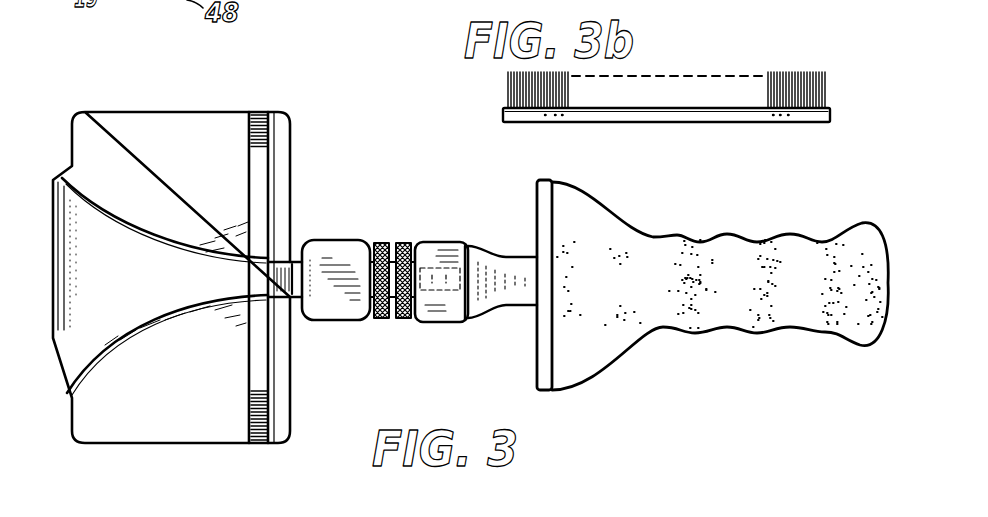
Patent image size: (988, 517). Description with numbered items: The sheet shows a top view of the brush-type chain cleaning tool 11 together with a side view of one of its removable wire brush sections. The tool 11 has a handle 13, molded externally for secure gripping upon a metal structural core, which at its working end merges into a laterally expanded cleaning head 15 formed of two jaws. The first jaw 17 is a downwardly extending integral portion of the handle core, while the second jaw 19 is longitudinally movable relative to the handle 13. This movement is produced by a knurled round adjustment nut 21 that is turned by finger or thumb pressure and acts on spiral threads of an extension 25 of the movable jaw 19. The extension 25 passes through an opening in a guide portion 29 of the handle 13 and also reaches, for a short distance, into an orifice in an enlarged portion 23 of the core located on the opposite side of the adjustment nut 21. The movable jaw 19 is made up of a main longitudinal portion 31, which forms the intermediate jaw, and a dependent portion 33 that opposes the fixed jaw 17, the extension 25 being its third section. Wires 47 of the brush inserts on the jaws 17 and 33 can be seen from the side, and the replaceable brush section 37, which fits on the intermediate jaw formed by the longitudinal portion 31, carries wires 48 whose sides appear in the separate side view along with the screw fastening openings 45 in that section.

In FIG. 3, the tool 11 is at (627, 215).
In FIG. 3, the handle 13 is at (751, 244).
In FIG. 3, the cleaning head 15 is at (138, 452).
In FIG. 3, the first part or jaw 17 is at (290, 162).
In FIG. 3, the second part or jaw 19 is at (170, 185).
In FIG. 3, the knurled round adjustment nut 21 is at (400, 243).
In FIG. 3, the enlarged portion of the core 23 is at (448, 284).
In FIG. 3, the extension 25 is at (265, 280).
In FIG. 3, the guide portion 29 is at (330, 250).
In FIG. 3, the main longitudinal portion 31 is at (180, 293).
In FIG. 3, the dependent portion 33 is at (55, 332).
In FIG. 3b, the replaceable brush section 37 is at (830, 118).
In FIG. 3b, the openings 45 is at (553, 119).
In FIG. 3, the wires 47 is at (258, 110).
In FIG. 3b, the wires 48 is at (814, 84).